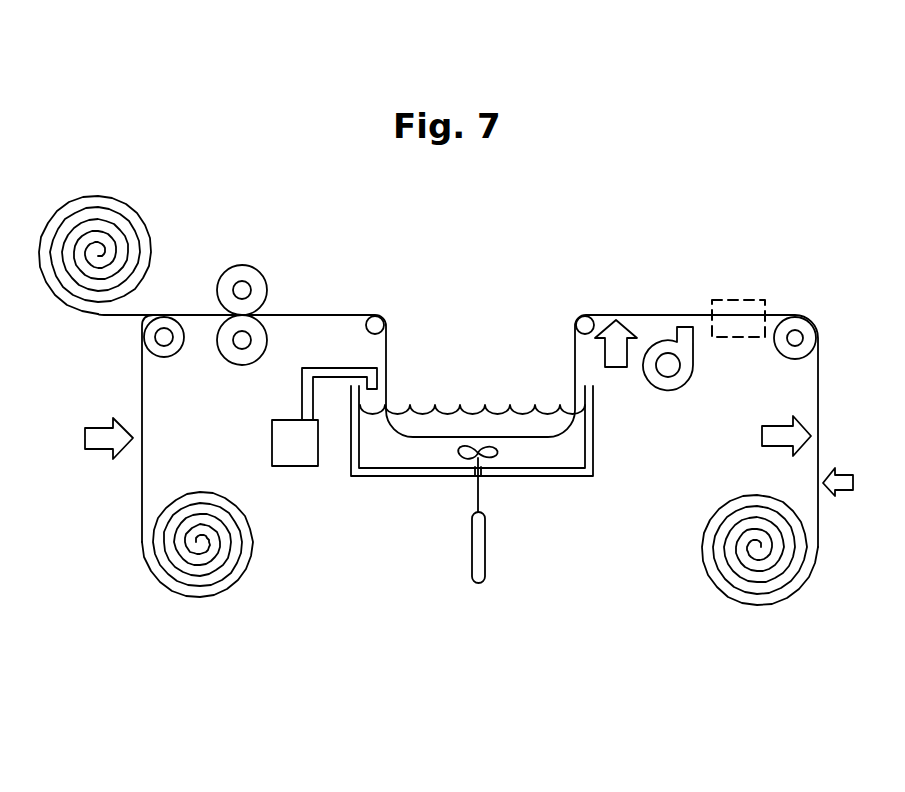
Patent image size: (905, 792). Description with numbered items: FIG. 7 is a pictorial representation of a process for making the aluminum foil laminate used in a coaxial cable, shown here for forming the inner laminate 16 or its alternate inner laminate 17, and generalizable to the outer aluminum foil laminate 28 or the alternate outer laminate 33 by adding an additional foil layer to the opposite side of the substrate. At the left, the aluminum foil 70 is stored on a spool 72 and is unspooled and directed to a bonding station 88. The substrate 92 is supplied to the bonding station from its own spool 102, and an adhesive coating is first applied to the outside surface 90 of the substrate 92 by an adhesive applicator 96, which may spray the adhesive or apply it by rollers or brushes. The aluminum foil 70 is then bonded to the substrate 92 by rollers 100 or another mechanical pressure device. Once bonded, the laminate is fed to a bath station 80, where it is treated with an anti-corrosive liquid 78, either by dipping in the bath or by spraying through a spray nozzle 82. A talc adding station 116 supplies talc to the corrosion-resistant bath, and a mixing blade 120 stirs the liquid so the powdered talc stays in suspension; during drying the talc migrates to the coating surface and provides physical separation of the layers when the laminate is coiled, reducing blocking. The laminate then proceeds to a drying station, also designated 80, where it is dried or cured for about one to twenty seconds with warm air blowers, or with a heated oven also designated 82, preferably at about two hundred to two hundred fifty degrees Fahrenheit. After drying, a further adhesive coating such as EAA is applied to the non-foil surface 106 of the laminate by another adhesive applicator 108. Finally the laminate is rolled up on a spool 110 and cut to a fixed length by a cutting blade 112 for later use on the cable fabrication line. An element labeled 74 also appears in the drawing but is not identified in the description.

The inner aluminum foil laminate 16 is at (529, 405).
The alternate inner laminate 17 is at (529, 405).
The outer aluminum foil laminate 28 is at (529, 405).
The alternate outer laminate 33 is at (650, 314).
The aluminum foil 70 is at (88, 316).
The spool 72 is at (110, 197).
The liquid bath station 74 is at (424, 562).
The anti-corrosive liquid 78 is at (535, 457).
The bath station 80 is at (677, 390).
The spray nozzle 82 is at (618, 366).
The bonding station 88 is at (311, 249).
The outside surface of substrate 90 is at (130, 524).
The substrate 92 is at (142, 384).
The adhesive applicator 96 is at (93, 449).
The rollers 100 is at (266, 284).
The spool 102 is at (194, 600).
The non-foil surface 106 is at (763, 348).
The adhesive applicator 108 is at (768, 447).
The spool 110 is at (725, 593).
The cutting blade 112 is at (848, 493).
The talc adding station 116 is at (272, 423).
The mixing blade 120 is at (473, 494).